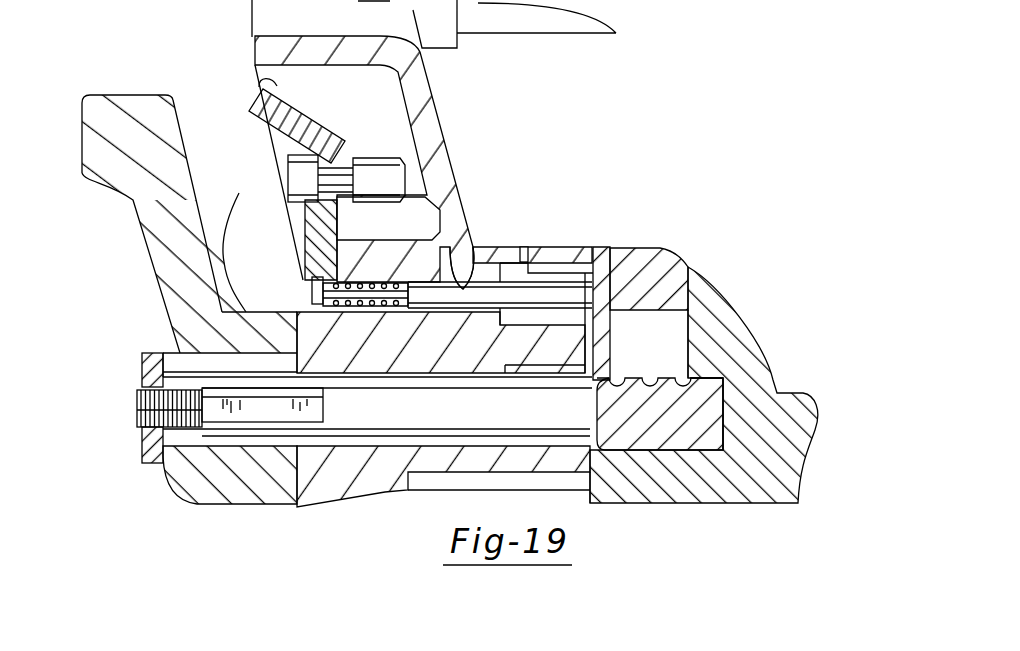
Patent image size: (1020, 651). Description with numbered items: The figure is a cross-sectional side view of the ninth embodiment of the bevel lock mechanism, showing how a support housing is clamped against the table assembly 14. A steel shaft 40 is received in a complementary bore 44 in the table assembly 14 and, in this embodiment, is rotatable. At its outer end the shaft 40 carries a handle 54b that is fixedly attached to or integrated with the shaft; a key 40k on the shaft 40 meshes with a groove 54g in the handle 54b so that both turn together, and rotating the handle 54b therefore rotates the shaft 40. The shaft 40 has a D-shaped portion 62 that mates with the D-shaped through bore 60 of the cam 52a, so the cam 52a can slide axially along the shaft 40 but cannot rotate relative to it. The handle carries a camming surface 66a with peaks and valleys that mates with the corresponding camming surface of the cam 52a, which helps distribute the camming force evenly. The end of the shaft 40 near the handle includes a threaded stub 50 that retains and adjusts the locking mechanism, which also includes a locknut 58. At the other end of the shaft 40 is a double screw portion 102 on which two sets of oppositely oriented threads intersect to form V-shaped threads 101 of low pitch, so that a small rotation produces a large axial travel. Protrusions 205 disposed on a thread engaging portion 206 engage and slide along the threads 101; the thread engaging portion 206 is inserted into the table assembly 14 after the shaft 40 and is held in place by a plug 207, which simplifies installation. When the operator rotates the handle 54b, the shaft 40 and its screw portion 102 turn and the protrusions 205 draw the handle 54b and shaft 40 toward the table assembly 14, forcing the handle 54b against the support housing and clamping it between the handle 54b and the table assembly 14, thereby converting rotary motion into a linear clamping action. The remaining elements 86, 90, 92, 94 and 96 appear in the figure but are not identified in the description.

The handle 54b is at (151, 107).
The lever 86 is at (258, 84).
The fastener 96 is at (383, 160).
The groove 54g is at (239, 196).
The spring 92 is at (360, 292).
The roller 90 is at (463, 252).
The pin 94 is at (312, 280).
The cam 52a is at (283, 312).
The key 40k is at (162, 353).
The locknut 58 is at (143, 355).
The threaded stub 50 is at (143, 398).
The D-shaped portion 62 is at (263, 412).
The D-shaped through bore 60 is at (283, 383).
The camming surface 66a is at (298, 330).
The shaft 40 is at (486, 427).
The bore 44 is at (578, 378).
The plug 207 is at (620, 268).
The protrusions 205 is at (650, 377).
The table assembly 14 is at (700, 286).
The thread engaging portion 206 is at (675, 328).
The V-shaped threads 101 is at (703, 395).
The double screw portion 102 is at (710, 418).